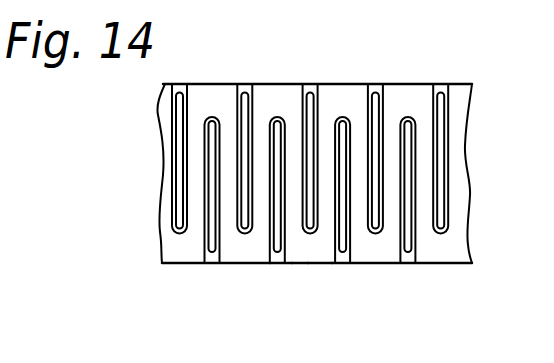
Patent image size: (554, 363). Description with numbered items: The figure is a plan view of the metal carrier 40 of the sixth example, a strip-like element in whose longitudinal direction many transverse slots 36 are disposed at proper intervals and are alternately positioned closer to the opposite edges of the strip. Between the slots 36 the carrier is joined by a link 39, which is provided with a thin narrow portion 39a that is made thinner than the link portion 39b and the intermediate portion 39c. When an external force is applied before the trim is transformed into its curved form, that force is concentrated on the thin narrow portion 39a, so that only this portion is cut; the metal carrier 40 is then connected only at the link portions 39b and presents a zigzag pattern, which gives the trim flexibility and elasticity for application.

The metal carrier 40 is at (309, 190).
The link 39 is at (341, 190).
The transverse slots 36 is at (182, 217).
The thin narrow portion 39a is at (282, 252).
The link portion 39b is at (317, 245).
The intermediate portion 39c is at (305, 252).